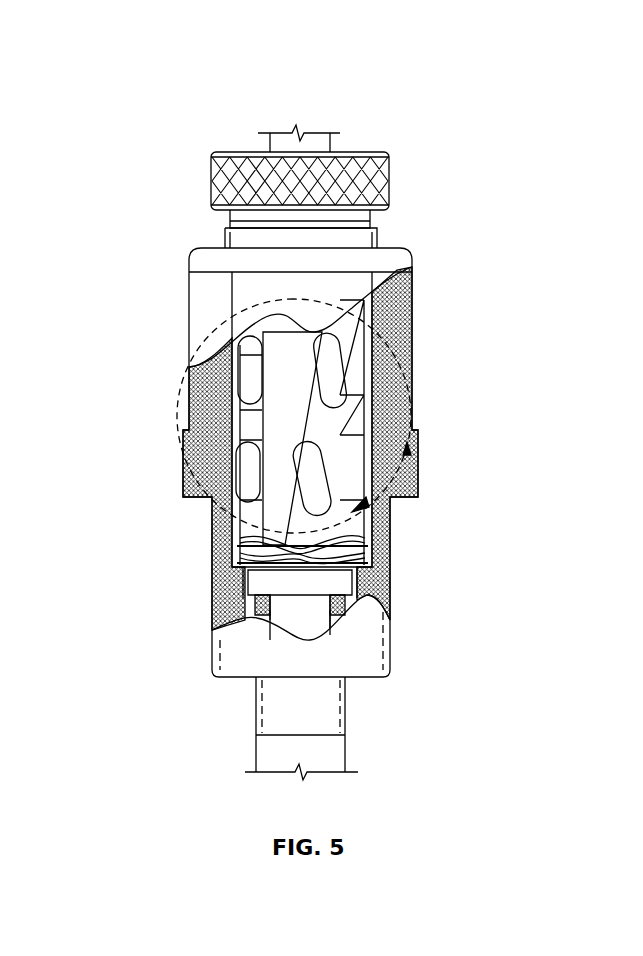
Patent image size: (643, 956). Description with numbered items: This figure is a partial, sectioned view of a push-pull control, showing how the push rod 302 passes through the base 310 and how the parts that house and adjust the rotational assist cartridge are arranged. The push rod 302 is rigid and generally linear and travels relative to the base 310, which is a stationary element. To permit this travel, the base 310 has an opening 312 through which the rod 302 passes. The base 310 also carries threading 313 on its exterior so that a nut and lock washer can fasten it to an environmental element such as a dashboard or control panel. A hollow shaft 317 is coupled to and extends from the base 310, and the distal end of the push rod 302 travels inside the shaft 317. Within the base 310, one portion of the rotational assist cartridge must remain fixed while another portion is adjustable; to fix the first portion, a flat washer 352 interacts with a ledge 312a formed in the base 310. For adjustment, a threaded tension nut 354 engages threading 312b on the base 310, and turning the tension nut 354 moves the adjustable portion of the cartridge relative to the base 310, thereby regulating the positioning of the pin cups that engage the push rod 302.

The push rod 302 is at (303, 608).
The base 310 is at (424, 287).
The opening 312 is at (247, 603).
The ledge 312a is at (378, 568).
The threading 312b is at (375, 301).
The threading 313 is at (390, 627).
The hollow shaft 317 is at (245, 747).
The flat washer 352 is at (386, 563).
The threaded tension nut 354 is at (397, 143).